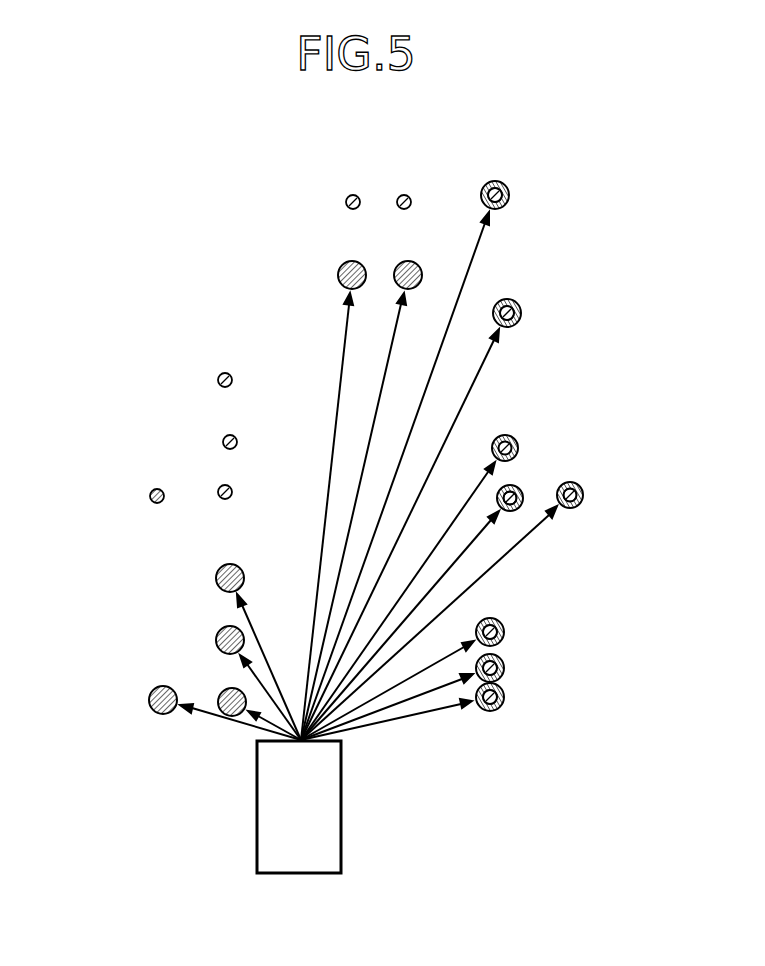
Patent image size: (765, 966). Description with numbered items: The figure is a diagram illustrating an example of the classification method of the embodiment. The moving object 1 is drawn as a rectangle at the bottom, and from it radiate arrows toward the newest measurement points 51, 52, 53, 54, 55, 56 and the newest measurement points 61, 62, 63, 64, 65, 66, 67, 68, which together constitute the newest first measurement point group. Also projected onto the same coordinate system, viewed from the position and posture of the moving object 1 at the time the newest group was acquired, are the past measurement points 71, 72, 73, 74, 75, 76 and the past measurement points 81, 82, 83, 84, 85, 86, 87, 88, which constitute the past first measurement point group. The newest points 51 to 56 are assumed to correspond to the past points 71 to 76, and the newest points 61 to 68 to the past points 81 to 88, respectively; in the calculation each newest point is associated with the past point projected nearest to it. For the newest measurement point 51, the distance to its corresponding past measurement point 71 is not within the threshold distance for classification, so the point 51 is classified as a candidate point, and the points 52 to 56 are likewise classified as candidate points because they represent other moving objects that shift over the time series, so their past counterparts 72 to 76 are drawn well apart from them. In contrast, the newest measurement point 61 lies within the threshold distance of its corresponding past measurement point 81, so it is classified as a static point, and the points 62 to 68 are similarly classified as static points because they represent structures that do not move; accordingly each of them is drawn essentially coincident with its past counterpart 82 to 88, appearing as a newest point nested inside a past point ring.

The moving object 1 is at (298, 874).
The newest measurement point 51 is at (149, 700).
The newest measurement point 52 is at (222, 692).
The newest measurement point 53 is at (216, 640).
The newest measurement point 54 is at (216, 578).
The newest measurement point 55 is at (342, 265).
The newest measurement point 56 is at (398, 265).
The newest measurement point 61 is at (500, 707).
The newest measurement point 62 is at (504, 668).
The newest measurement point 63 is at (504, 632).
The newest measurement point 64 is at (512, 484).
The newest measurement point 65 is at (522, 487).
The newest measurement point 66 is at (566, 509).
The newest measurement point 67 is at (514, 326).
The newest measurement point 68 is at (509, 196).
The past measurement point 71 is at (150, 496).
The past measurement point 72 is at (218, 492).
The past measurement point 73 is at (223, 442).
The past measurement point 74 is at (218, 380).
The past measurement point 75 is at (353, 195).
The past measurement point 76 is at (404, 195).
The past measurement point 81 is at (504, 697).
The past measurement point 82 is at (499, 658).
The past measurement point 83 is at (498, 620).
The past measurement point 84 is at (506, 435).
The past measurement point 85 is at (516, 484).
The past measurement point 86 is at (580, 505).
The past measurement point 87 is at (521, 313).
The past measurement point 88 is at (504, 184).